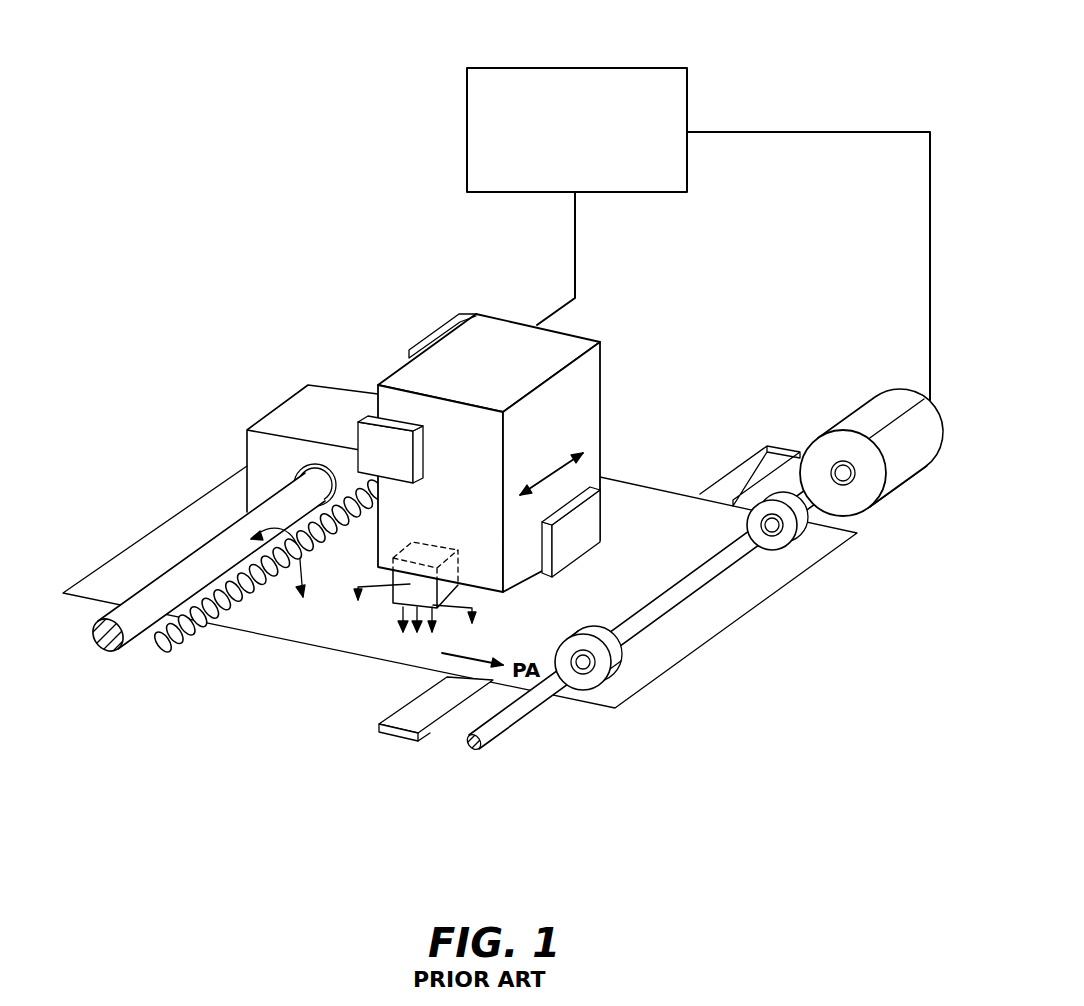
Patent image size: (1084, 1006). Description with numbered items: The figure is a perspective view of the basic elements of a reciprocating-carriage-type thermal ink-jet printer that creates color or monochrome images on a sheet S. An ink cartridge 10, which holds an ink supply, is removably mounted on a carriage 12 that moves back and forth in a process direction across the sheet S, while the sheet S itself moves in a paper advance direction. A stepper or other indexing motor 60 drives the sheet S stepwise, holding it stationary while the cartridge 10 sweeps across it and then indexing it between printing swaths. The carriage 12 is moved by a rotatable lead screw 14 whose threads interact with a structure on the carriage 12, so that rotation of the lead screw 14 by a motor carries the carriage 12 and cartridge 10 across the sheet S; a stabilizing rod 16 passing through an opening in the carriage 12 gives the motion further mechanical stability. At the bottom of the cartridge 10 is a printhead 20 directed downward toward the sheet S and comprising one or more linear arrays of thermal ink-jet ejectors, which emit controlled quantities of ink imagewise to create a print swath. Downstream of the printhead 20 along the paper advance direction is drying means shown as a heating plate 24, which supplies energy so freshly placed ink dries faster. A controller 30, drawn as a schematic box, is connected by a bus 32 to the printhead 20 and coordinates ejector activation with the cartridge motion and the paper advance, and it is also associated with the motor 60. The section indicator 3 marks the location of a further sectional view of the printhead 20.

The ink cartridge 10 is at (590, 393).
The carriage 12 is at (339, 407).
The lead screw 14 is at (160, 648).
The stabilizing rod 16 is at (200, 560).
The printhead 20 is at (408, 582).
The heating plate 24 is at (390, 726).
The controller 30 is at (690, 88).
The bus 32 is at (574, 258).
The indexing motor 60 is at (838, 415).
The sheet S is at (732, 607).
The section line for FIG. 3 is at (415, 617).